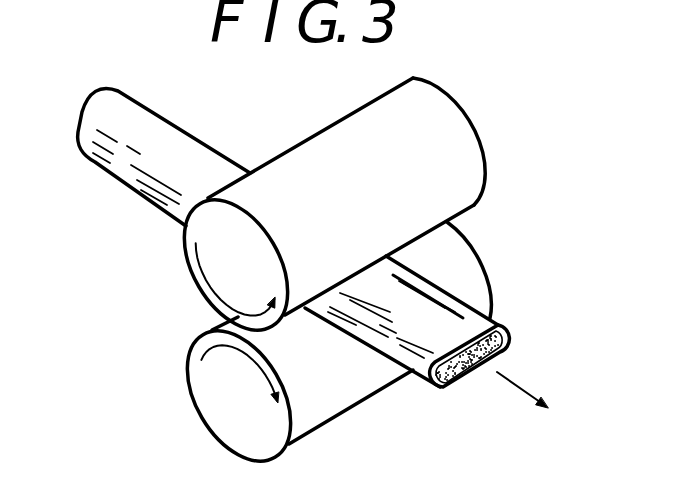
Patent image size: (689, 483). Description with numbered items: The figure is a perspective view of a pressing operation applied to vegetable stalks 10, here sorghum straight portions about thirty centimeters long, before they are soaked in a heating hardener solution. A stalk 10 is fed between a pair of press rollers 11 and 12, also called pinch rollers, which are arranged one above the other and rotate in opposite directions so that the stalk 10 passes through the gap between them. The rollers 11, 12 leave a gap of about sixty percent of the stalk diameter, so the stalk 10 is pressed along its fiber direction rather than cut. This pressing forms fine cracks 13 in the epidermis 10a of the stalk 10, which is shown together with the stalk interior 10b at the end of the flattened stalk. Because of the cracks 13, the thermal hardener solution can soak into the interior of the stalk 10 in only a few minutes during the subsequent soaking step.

The vegetable stalk 10 is at (215, 140).
The epidermis 10a is at (397, 353).
The tape core 10b is at (463, 370).
The press roller 11 is at (190, 231).
The press roller 12 is at (197, 377).
The cracks 13 is at (428, 282).